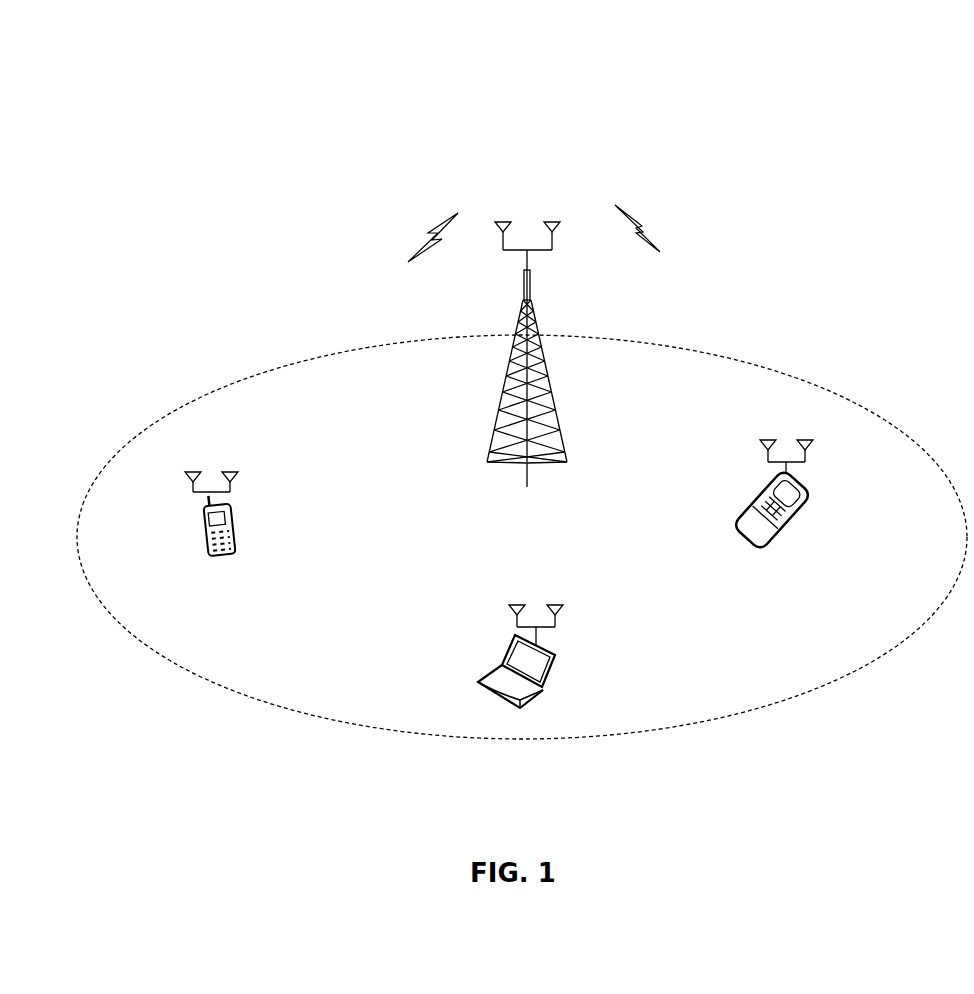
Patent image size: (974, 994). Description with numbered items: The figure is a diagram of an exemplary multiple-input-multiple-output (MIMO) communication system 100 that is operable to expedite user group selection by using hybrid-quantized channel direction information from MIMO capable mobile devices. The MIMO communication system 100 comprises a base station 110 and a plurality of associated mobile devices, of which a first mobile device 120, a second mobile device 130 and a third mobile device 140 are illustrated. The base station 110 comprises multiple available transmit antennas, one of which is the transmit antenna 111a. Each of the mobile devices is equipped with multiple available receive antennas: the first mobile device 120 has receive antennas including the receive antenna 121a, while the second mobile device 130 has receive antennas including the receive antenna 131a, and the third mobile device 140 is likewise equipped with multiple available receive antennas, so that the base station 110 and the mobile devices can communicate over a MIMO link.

The MIMO communication system 100 is at (150, 133).
The base station 110 is at (565, 300).
The transmit antenna 111a is at (527, 226).
The mobile device 120 is at (237, 530).
The receive antenna 121a is at (225, 470).
The mobile device 130 is at (557, 663).
The receive antenna 131a is at (532, 613).
The mobile device 140 is at (795, 533).